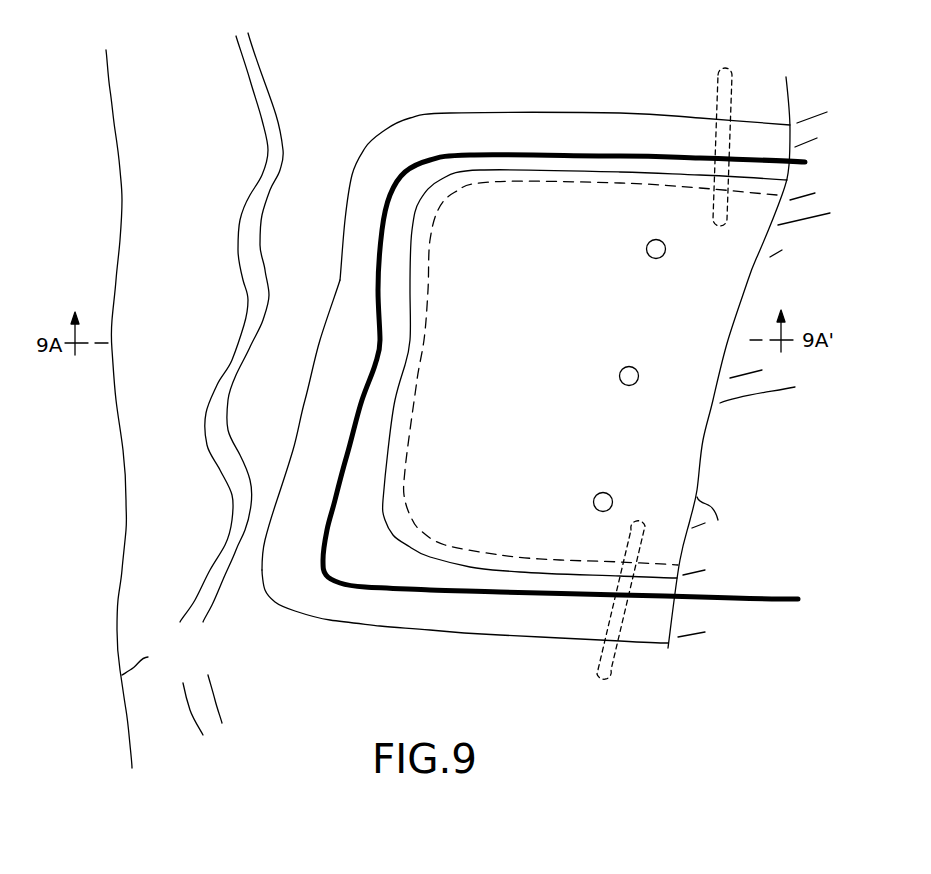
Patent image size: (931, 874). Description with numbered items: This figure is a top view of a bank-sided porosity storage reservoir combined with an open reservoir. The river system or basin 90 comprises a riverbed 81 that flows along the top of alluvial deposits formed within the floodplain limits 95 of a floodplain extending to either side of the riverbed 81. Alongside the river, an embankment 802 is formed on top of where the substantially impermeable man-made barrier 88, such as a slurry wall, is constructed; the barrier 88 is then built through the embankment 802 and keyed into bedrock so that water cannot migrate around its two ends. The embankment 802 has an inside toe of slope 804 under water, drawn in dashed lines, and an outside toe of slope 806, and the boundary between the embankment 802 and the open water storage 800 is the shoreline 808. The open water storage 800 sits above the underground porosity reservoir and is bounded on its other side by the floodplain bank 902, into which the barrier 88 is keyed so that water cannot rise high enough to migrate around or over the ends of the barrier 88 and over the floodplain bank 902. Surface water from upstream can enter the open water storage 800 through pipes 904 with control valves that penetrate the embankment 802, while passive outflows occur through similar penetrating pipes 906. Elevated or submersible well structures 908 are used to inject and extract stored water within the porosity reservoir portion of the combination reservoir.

The river system or basin 90 is at (347, 76).
The floodplain limits 95 is at (122, 568).
The riverbed 81 is at (223, 388).
The substantially impermeable man-made barrier (SIMM barrier) 88 is at (524, 153).
The open water storage 800 is at (611, 334).
The embankment 802 is at (434, 137).
The inside toe of slope 804 is at (428, 277).
The outside toe of slope 806 is at (645, 115).
The shoreline 808 is at (418, 228).
The floodplain bank 902 is at (703, 489).
The pipes (inflow) 904 is at (733, 83).
The pipes (outflow) 906 is at (612, 672).
The well structures 908 is at (666, 249).